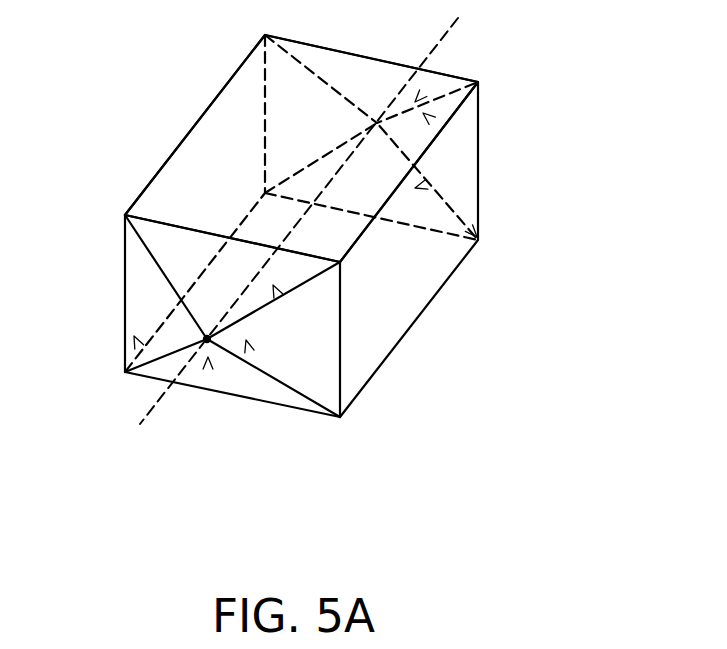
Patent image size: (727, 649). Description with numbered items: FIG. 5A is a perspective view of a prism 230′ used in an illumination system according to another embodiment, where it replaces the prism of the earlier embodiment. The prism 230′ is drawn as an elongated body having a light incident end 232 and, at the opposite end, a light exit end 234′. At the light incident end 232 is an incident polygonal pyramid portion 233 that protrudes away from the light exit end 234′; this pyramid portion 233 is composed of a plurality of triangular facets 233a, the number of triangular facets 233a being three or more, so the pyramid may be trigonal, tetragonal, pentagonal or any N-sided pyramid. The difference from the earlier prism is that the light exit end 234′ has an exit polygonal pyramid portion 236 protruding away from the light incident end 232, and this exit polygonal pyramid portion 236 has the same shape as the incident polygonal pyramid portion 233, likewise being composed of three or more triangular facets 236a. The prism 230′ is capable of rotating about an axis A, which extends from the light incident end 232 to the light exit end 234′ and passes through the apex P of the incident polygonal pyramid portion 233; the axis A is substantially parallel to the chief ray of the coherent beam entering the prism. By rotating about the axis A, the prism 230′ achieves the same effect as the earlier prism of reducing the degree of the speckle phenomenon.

The prism 230′ is at (494, 448).
The light incident end 232 is at (147, 200).
The light exit end 234′ is at (253, 72).
The incident polygonal pyramid portion 233 is at (348, 490).
The triangular facets 233a is at (134, 336).
The exit polygonal pyramid portion 236 is at (590, 93).
The triangular facets 236a is at (415, 102).
The apex P is at (203, 339).
The axis A is at (442, 40).